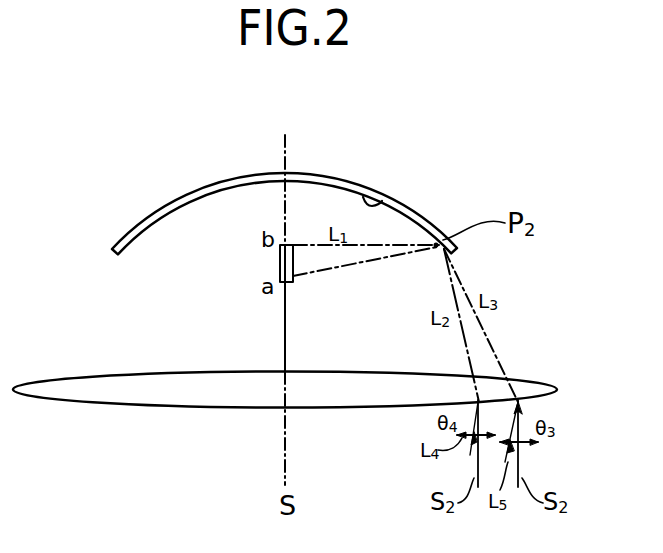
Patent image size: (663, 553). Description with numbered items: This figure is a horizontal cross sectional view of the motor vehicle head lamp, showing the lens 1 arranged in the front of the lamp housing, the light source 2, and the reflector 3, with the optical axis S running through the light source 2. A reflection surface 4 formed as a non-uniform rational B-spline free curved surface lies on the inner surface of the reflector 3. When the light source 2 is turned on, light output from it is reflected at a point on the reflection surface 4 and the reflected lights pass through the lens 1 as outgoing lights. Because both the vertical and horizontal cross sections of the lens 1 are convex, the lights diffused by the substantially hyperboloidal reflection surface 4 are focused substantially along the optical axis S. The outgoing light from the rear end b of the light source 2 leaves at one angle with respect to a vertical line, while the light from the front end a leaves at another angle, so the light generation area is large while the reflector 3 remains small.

The lens 1 is at (383, 410).
The light source 2 is at (293, 273).
The reflector 3 is at (172, 200).
The reflection surface 4 is at (388, 197).